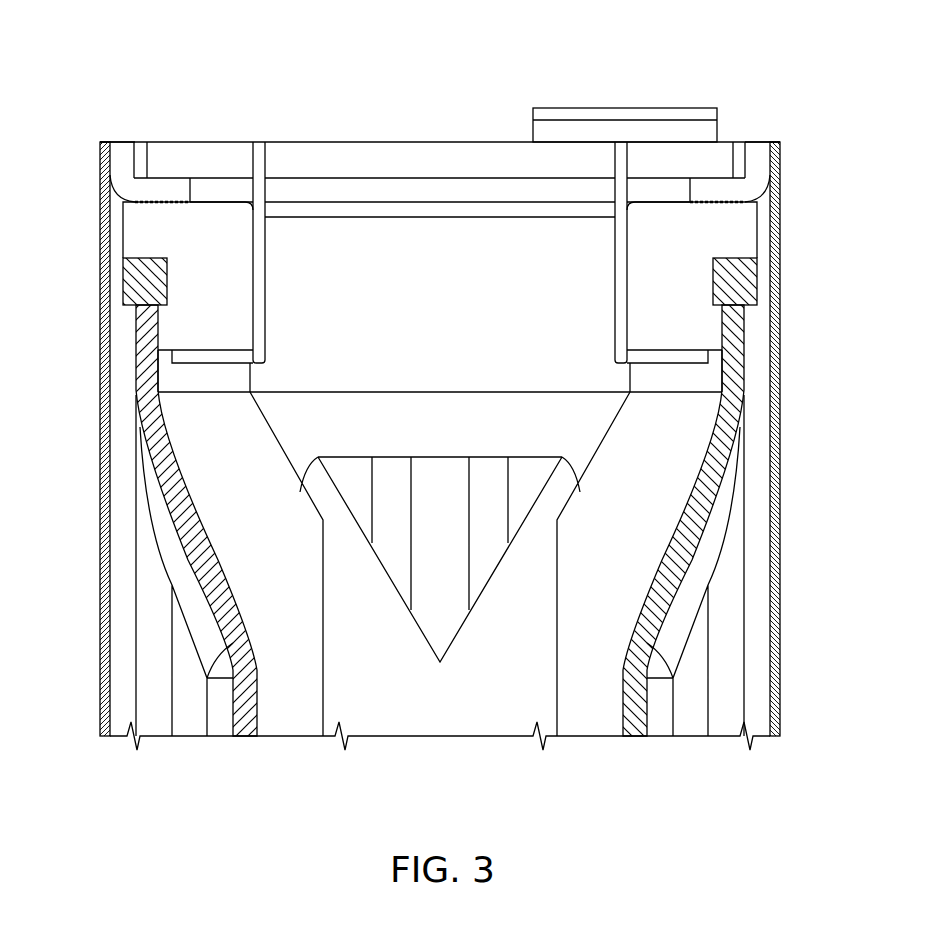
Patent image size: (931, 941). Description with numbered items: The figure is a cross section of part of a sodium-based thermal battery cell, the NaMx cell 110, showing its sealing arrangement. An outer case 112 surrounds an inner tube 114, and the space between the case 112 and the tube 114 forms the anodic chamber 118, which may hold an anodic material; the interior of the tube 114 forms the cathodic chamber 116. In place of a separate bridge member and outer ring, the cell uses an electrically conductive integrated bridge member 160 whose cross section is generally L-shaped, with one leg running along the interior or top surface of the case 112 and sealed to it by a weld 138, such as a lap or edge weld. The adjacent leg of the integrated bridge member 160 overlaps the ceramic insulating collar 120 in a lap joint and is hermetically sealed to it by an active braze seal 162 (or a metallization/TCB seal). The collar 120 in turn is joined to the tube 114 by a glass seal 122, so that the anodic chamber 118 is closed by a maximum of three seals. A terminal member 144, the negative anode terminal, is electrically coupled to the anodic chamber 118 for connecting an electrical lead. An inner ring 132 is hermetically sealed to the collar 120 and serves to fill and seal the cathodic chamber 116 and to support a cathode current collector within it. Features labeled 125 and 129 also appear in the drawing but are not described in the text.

The NaMx cell 110 is at (168, 36).
The case 112 is at (110, 222).
The tube 114 is at (145, 372).
The cathodic chamber 116 is at (468, 439).
The anodic chamber 118 is at (155, 703).
The ceramic insulating collar 120 is at (147, 230).
The glass seal 122 is at (125, 278).
The slot 125 is at (216, 352).
The chamber 129 is at (193, 322).
The inner ring 132 is at (258, 150).
The weld 138 is at (100, 143).
The terminal member 144 is at (583, 108).
The integrated bridge member 160 is at (122, 152).
The active braze seal 162 is at (158, 205).